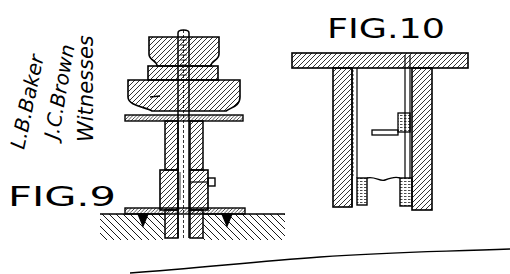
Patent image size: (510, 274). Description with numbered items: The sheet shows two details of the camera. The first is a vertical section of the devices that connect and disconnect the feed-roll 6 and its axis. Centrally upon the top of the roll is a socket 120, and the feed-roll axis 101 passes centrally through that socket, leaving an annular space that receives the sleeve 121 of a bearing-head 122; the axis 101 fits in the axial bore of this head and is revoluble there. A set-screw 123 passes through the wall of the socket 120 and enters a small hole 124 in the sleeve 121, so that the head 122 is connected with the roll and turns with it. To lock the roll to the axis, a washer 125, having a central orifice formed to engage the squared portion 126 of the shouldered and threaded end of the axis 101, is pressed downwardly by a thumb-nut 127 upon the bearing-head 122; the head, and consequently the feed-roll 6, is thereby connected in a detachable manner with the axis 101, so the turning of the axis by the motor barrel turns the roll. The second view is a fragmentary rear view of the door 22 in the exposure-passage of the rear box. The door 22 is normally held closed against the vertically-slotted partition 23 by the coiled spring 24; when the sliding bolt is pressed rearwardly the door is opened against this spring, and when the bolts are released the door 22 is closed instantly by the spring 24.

In FIG. 9, the thumb-nut 127 is at (219, 41).
In FIG. 9, the washer 125 is at (150, 70).
In FIG. 9, the squared portion 126 is at (155, 97).
In FIG. 9, the bearing-head 122 is at (240, 100).
In FIG. 9, the feed-roll axis 101 is at (177, 143).
In FIG. 9, the sleeve 121 is at (200, 150).
In FIG. 9, the socket 120 is at (210, 201).
In FIG. 9, the set-screw 123 is at (215, 182).
In FIG. 9, the small hole 124 is at (190, 178).
In FIG. 9, the feed-roll 6 is at (274, 213).
In FIG. 10, the door 22 is at (384, 123).
In FIG. 10, the coiled spring 24 is at (400, 136).
In FIG. 10, the vertically-slotted partition 23 is at (361, 205).